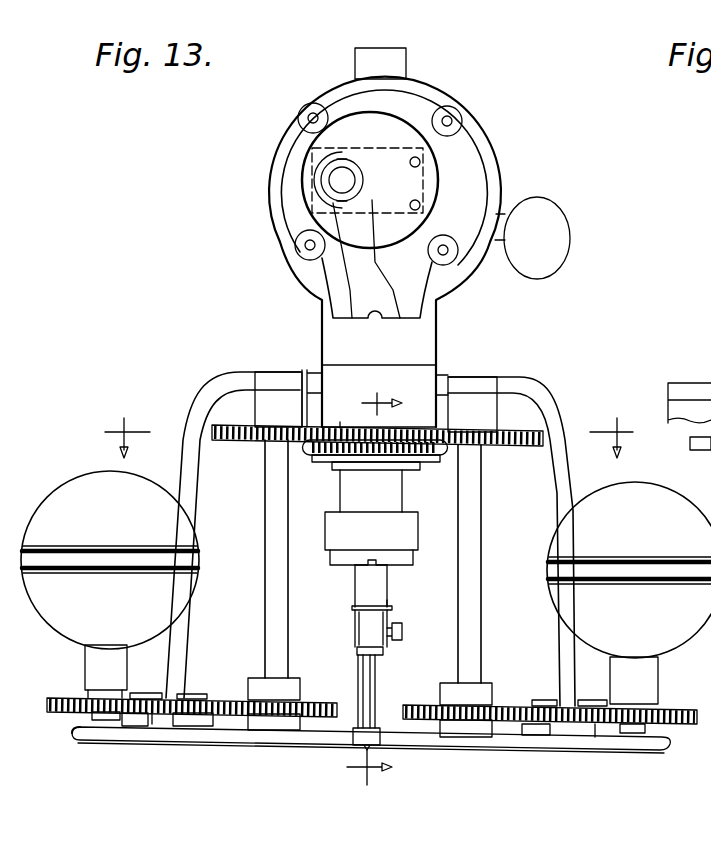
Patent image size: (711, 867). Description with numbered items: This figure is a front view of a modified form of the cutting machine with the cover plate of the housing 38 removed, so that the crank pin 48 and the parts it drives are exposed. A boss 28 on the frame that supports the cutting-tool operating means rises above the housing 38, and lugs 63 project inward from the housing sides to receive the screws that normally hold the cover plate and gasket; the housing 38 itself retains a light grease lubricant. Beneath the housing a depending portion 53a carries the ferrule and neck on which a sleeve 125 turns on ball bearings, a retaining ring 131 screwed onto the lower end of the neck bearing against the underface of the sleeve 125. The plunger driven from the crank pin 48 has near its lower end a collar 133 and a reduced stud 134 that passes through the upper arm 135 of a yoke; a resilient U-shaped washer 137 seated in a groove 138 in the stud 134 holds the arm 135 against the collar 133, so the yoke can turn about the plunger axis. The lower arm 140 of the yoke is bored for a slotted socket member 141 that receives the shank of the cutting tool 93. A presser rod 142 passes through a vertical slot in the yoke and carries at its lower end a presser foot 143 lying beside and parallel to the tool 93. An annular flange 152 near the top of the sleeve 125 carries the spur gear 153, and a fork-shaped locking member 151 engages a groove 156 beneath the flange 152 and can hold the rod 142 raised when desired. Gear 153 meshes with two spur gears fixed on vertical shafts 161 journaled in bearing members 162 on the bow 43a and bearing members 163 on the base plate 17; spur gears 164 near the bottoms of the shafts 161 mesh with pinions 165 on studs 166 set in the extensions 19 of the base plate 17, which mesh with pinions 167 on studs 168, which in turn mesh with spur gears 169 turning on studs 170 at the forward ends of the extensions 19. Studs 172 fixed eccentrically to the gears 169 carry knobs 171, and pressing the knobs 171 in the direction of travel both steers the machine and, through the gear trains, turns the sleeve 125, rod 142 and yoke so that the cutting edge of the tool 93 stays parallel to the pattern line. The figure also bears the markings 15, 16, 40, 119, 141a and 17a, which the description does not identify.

The boss 28 is at (397, 63).
The housing 38 is at (297, 117).
The lugs 63 is at (308, 126).
The crank pin 48 is at (342, 178).
The knob 40 is at (543, 250).
The connecting rod 119 is at (357, 243).
The bearing members 162 is at (278, 392).
The depending portion 53a is at (423, 377).
The bow 43a is at (690, 442).
The section line 16 is at (374, 590).
The spur gear 153 is at (340, 427).
The section line 15 is at (370, 425).
The knobs 171 is at (63, 497).
The vertical shafts 161 is at (273, 510).
The locking member 151 is at (333, 458).
The groove 156 is at (370, 462).
The annular flange 152 is at (442, 457).
The sleeve 125 is at (395, 499).
The retaining ring 131 is at (412, 562).
The collar 133 is at (370, 571).
The upper arm 135 is at (375, 588).
The groove 138 is at (380, 610).
The stud 134 is at (388, 610).
The washer 137 is at (362, 617).
The lower arm 140 is at (368, 633).
The latch 141a is at (402, 635).
The socket member 141 is at (383, 653).
The presser rod 142 is at (377, 683).
The cutting tool 93 is at (370, 692).
The presser foot 143 is at (377, 728).
The spur gears 164 is at (280, 705).
The bearing members 163 is at (273, 725).
The extensions 19 is at (178, 732).
The base end 17a is at (72, 728).
The base plate 17 is at (94, 752).
The studs 172 is at (97, 667).
The studs 170 is at (120, 722).
The studs 168 is at (147, 693).
The studs 166 is at (200, 694).
The pinions 165 is at (212, 727).
The pinions 167 is at (153, 714).
The spur gears 169 is at (47, 705).